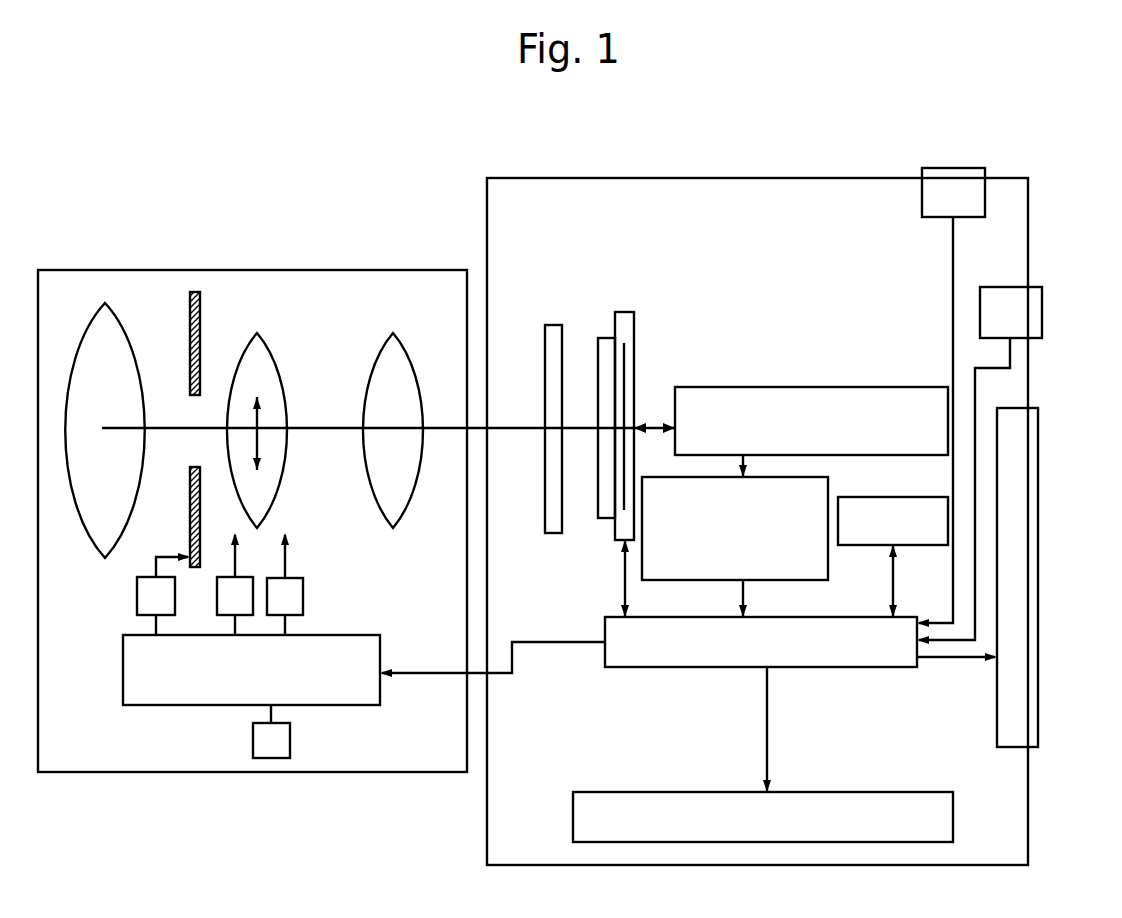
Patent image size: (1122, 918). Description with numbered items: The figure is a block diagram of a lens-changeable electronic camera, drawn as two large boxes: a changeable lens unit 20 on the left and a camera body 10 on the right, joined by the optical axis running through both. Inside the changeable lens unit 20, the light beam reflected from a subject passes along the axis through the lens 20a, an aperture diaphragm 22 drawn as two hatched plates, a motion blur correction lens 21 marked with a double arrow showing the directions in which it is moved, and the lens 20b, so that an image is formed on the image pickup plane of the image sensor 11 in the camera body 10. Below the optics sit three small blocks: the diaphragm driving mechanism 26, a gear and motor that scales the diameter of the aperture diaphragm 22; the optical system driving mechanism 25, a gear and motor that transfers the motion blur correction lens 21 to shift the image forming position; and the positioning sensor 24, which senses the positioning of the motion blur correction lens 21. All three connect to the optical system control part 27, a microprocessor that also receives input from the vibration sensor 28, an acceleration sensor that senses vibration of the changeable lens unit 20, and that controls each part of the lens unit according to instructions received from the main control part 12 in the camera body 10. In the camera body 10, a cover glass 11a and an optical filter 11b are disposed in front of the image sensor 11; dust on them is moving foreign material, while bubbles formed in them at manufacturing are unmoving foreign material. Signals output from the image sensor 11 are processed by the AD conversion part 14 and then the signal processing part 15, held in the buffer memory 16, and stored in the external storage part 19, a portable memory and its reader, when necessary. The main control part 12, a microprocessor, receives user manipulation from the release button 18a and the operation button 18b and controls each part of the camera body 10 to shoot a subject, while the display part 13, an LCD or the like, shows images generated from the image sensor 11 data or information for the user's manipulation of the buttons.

The camera body 10 is at (517, 200).
The image sensor 11 is at (624, 312).
The cover glass 11a is at (600, 344).
The optical filter 11b is at (553, 325).
The main control part 12 is at (865, 667).
The display part 13 is at (1038, 532).
The AD conversion part 14 is at (835, 387).
The signal processing part 15 is at (828, 568).
The buffer memory 16 is at (930, 548).
The release button 18a is at (963, 180).
The operation button 18b is at (1042, 316).
The external storage part 19 is at (915, 792).
The changeable lens unit 20 is at (70, 282).
The lens 20a is at (125, 354).
The lens 20b is at (413, 385).
The motion blur correction lens 21 is at (273, 378).
The aperture diaphragm 22 is at (203, 335).
The positioning sensor 24 is at (303, 597).
The optical system driving mechanism 25 is at (220, 598).
The diaphragm driving mechanism 26 is at (137, 592).
The optical system control part 27 is at (380, 640).
The vibration sensor 28 is at (290, 740).